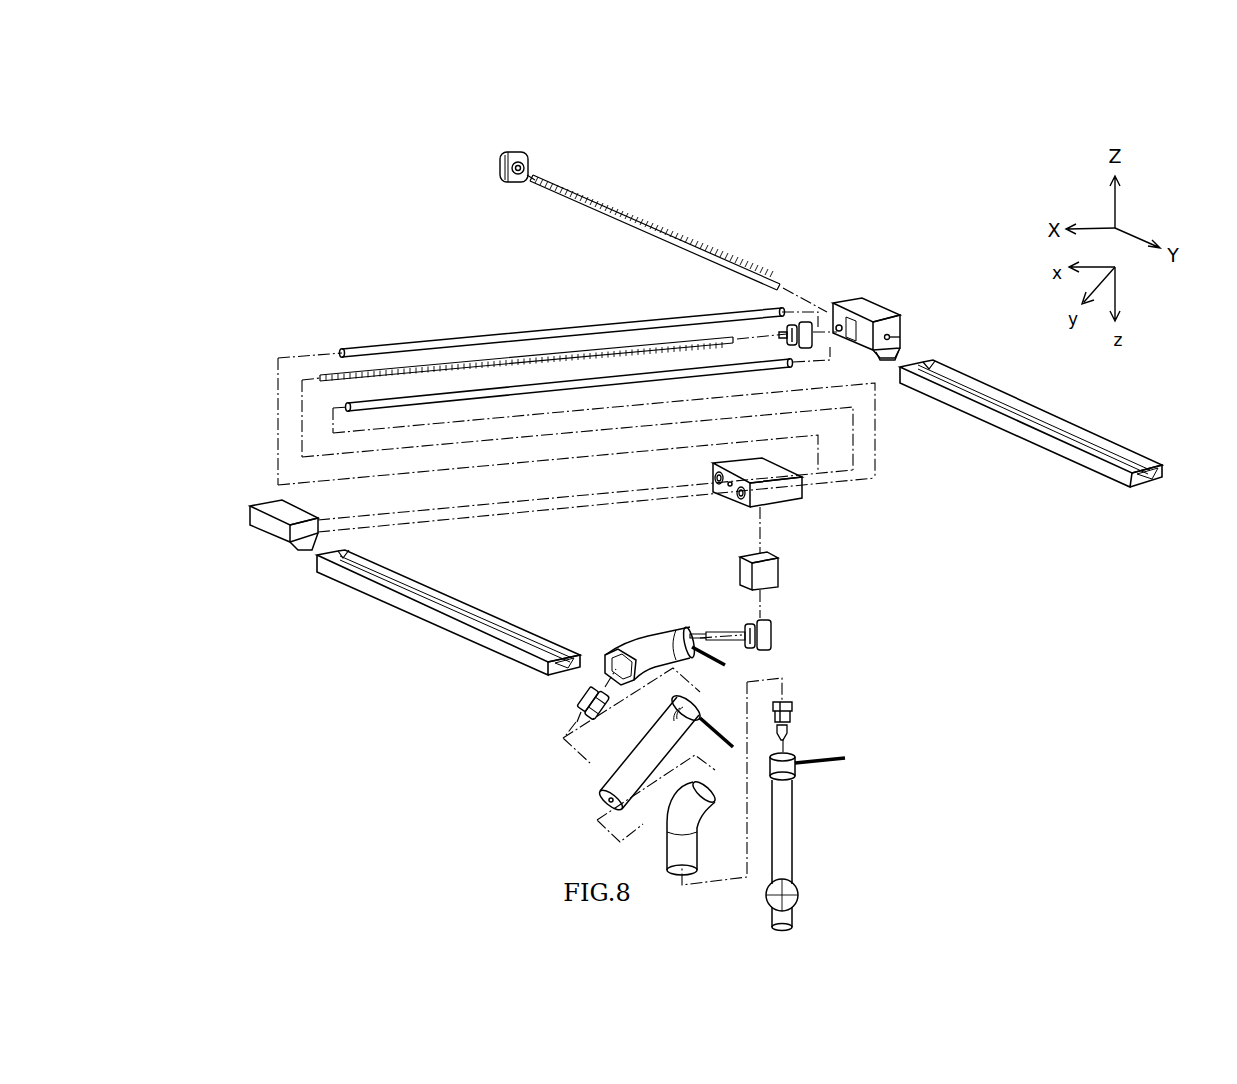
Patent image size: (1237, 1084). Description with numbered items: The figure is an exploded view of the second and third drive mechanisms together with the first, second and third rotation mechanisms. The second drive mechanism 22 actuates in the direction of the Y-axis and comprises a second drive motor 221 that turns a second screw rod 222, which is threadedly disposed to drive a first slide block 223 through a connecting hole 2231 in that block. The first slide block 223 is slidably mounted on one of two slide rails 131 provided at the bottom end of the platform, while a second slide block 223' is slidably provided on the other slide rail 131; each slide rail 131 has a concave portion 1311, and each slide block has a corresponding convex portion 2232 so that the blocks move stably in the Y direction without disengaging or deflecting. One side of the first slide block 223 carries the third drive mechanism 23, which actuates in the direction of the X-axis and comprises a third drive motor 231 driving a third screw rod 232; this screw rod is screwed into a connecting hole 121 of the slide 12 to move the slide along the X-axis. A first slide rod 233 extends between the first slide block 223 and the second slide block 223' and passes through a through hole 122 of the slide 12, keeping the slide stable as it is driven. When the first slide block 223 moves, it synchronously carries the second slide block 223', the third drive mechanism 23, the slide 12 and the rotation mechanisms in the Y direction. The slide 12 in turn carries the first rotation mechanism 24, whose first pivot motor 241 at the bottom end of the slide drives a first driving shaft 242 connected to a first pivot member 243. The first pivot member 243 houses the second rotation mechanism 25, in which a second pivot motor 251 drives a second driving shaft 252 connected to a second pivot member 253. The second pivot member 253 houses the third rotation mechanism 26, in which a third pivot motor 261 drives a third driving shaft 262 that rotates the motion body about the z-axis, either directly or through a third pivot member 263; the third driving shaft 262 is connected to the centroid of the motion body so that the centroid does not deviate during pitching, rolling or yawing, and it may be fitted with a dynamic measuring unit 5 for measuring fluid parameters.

The dynamic measuring unit 5 is at (782, 900).
The slide 12 is at (785, 497).
The connecting hole 121 is at (737, 473).
The through hole 122 is at (745, 488).
The slide rails 131 is at (1137, 454).
The concave portion 1311 is at (1150, 478).
The second drive mechanism 22 is at (632, 145).
The second drive motor 221 is at (520, 165).
The second screw rod 222 is at (650, 231).
The first slide block 223 is at (856, 295).
The second slide block 223' is at (233, 513).
The connecting hole 2231 is at (889, 336).
The convex portion 2232 is at (882, 365).
The third drive mechanism 23 is at (572, 263).
The third drive motor 231 is at (783, 330).
The third screw rod 232 is at (513, 362).
The first slide rod 233 is at (403, 348).
The first rotation mechanism 24 is at (573, 535).
The first pivot motor 241 is at (742, 627).
The first driving shaft 242 is at (738, 630).
The first pivot member 243 is at (637, 650).
The second rotation mechanism 25 is at (480, 782).
The second pivot motor 251 is at (582, 698).
The second driving shaft 252 is at (600, 713).
The second pivot member 253 is at (677, 848).
The third rotation mechanism 26 is at (930, 718).
The third pivot motor 261 is at (792, 713).
The third driving shaft 262 is at (784, 730).
The third pivot member 263 is at (783, 824).